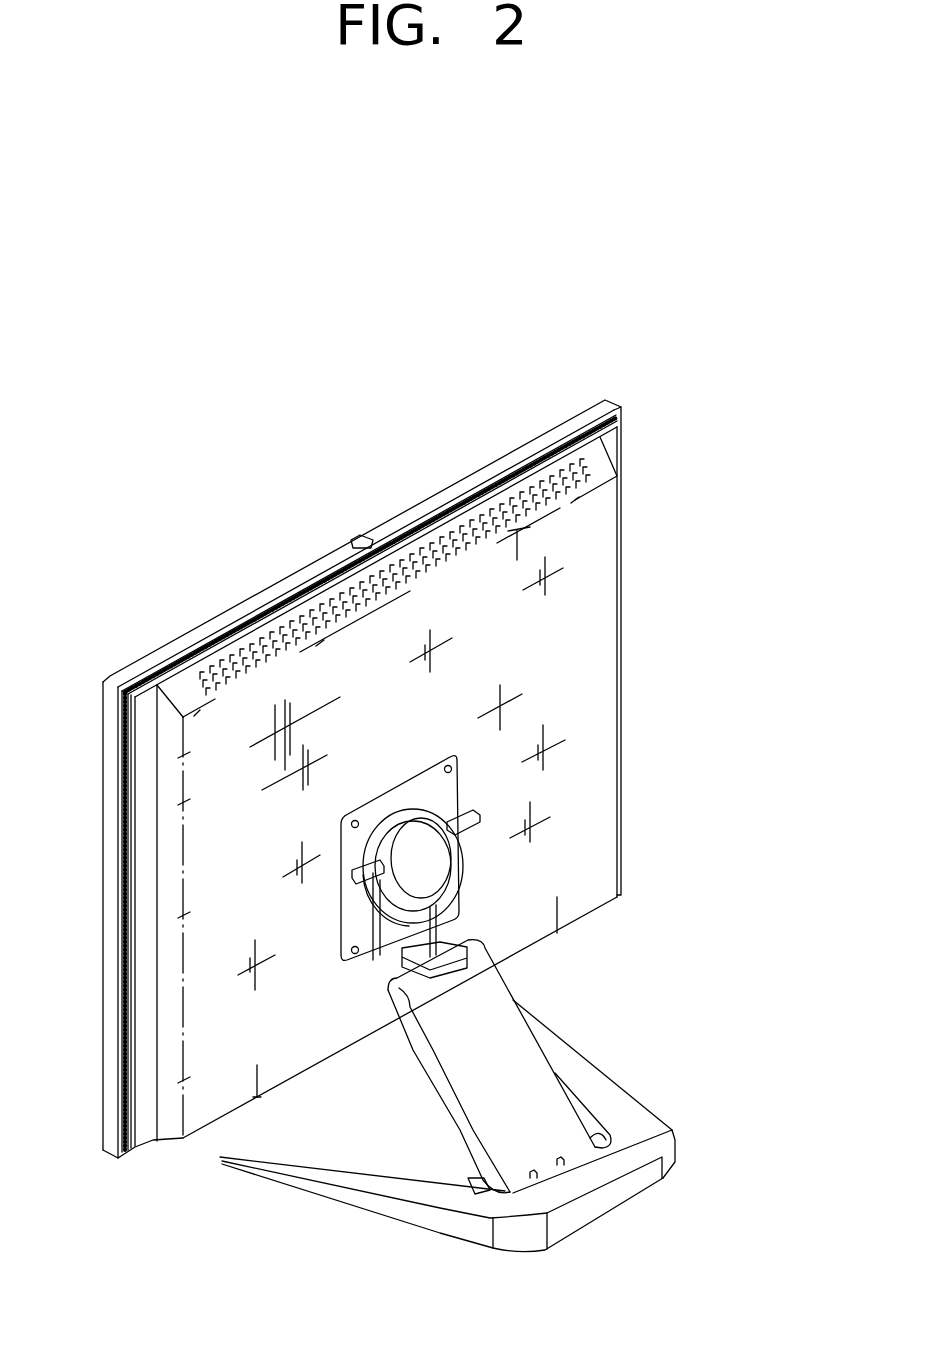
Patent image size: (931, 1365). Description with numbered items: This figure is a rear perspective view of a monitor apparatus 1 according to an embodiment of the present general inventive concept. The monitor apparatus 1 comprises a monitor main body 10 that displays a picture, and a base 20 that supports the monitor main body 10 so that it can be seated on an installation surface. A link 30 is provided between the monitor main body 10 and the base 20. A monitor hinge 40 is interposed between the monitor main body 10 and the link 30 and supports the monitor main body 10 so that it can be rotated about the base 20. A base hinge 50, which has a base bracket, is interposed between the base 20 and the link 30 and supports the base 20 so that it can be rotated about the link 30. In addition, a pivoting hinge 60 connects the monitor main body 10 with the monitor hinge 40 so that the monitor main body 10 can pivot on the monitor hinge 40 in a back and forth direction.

The monitor apparatus 1 is at (112, 524).
The monitor main body 10 is at (618, 657).
The base 20 is at (537, 1250).
The link 30 is at (434, 1114).
The monitor hinge 40 is at (478, 927).
The base hinge 50 is at (478, 1203).
The pivoting hinge 60 is at (480, 790).